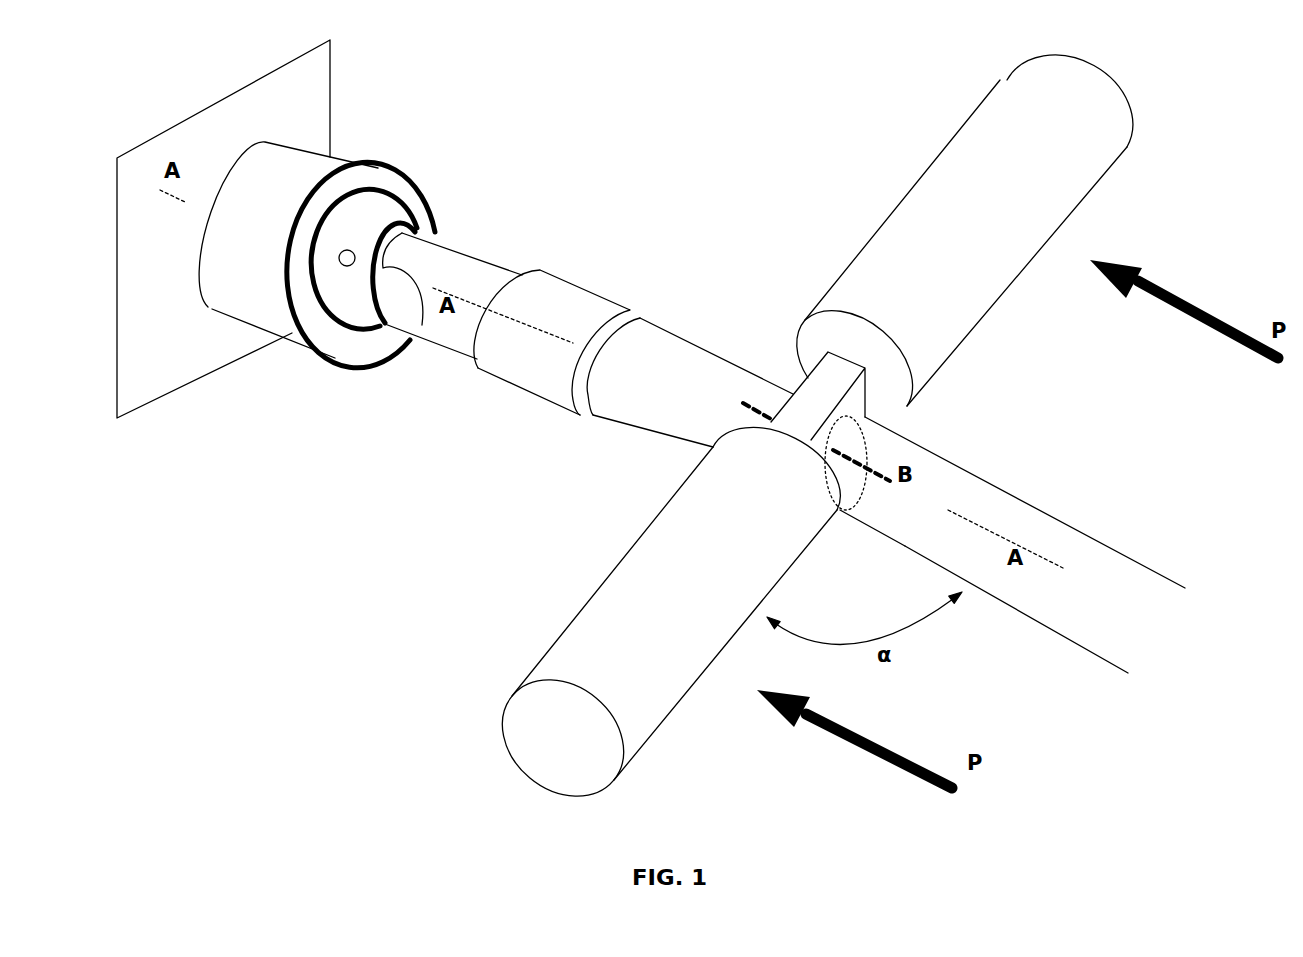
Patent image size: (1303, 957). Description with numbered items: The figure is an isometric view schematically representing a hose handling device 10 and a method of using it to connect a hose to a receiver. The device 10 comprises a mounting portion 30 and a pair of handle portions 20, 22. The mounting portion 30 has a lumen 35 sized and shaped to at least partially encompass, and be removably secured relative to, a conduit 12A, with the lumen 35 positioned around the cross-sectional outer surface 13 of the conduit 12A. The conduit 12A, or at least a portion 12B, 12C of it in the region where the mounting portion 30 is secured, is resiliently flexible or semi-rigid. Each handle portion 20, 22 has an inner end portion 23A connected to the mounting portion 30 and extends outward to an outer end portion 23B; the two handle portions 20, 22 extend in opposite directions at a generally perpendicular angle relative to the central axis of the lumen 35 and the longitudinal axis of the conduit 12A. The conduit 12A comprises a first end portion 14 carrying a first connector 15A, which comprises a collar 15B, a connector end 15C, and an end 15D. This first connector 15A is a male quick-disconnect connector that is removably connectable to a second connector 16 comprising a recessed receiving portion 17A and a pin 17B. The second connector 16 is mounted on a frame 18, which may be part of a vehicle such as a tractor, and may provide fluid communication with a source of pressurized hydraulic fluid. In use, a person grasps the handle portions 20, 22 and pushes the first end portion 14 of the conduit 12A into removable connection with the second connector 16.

The device 10 is at (710, 188).
The conduit 12A is at (1012, 545).
The conduit portion 12B is at (667, 417).
The conduit portion 12C is at (898, 528).
The cross-sectional outer surface 13 is at (681, 390).
The first end portion 14 is at (464, 328).
The first connector 15A is at (571, 349).
The collar 15B is at (533, 377).
The connector end 15C is at (465, 268).
The end 15D is at (422, 325).
The second connector 16 is at (289, 331).
The receiving portion 17A is at (333, 337).
The pin 17B is at (355, 251).
The frame 18 is at (167, 353).
The handle portion 20 is at (660, 736).
The handle portion 22 is at (965, 130).
The inner end portion 23A is at (936, 363).
The outer end portion 23B is at (1100, 137).
The mounting portion 30 is at (782, 403).
The lumen 35 is at (867, 452).